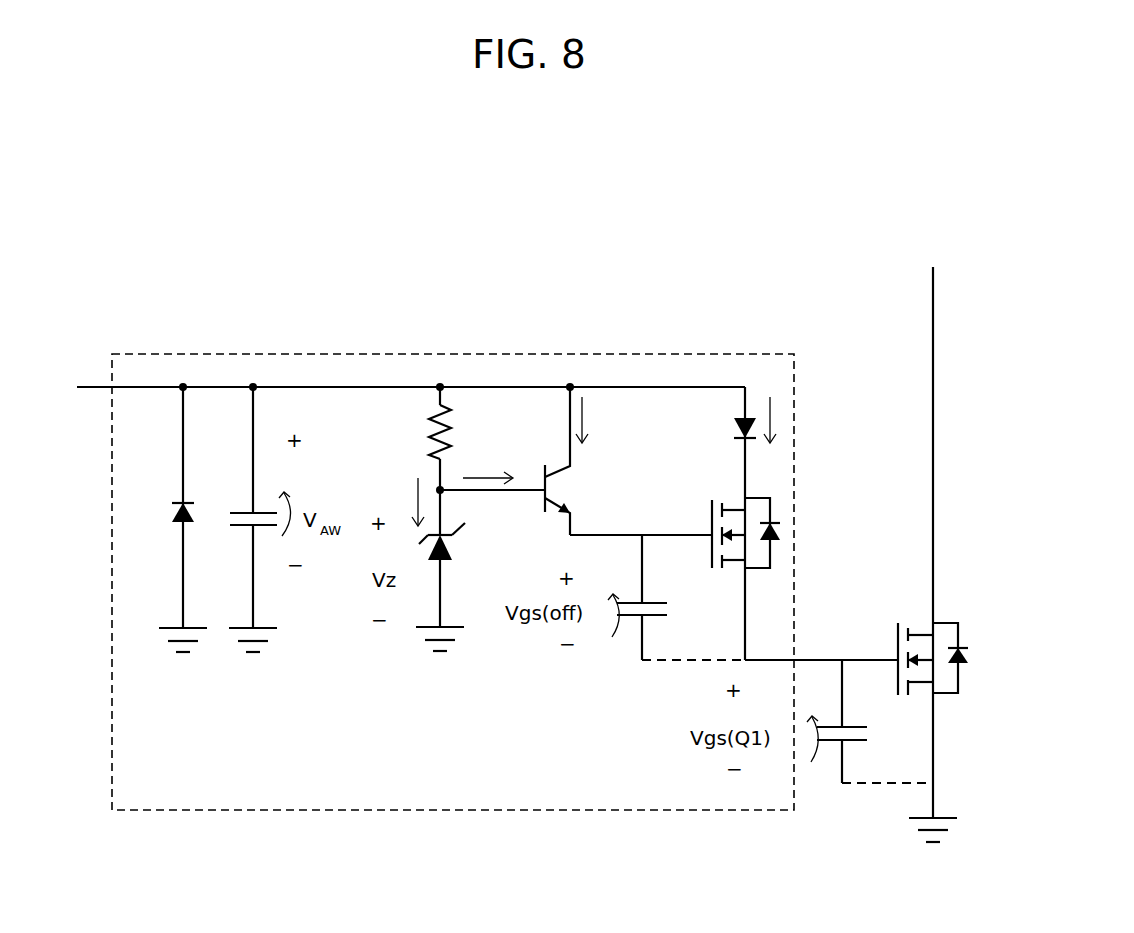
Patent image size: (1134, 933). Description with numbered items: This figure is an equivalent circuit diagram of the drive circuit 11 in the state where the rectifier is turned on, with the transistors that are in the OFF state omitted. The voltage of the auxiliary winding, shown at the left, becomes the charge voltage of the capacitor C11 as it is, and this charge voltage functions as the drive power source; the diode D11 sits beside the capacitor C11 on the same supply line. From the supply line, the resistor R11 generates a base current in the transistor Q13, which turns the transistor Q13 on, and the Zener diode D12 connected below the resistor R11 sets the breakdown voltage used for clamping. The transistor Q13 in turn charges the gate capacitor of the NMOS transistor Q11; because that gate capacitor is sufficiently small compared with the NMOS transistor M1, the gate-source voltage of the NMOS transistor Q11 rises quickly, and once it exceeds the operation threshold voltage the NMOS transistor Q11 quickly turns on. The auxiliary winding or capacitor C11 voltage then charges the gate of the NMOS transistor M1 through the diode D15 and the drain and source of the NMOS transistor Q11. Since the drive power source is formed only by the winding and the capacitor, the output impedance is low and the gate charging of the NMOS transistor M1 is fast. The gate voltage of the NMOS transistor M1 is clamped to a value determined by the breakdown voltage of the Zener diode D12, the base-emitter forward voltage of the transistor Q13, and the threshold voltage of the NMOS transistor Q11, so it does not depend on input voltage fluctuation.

The drive circuit 11 is at (472, 840).
The diode D11 is at (180, 521).
The capacitor C11 is at (240, 525).
The resistor R11 is at (454, 430).
The Zener diode D12 is at (453, 549).
The transistor Q13 is at (560, 490).
The NMOS transistor Q11 is at (710, 505).
The diode D15 is at (732, 429).
The NMOS transistor M1 is at (896, 640).